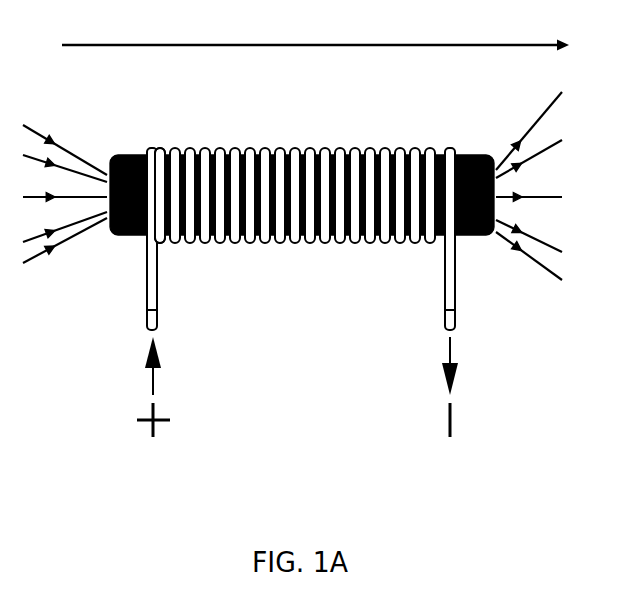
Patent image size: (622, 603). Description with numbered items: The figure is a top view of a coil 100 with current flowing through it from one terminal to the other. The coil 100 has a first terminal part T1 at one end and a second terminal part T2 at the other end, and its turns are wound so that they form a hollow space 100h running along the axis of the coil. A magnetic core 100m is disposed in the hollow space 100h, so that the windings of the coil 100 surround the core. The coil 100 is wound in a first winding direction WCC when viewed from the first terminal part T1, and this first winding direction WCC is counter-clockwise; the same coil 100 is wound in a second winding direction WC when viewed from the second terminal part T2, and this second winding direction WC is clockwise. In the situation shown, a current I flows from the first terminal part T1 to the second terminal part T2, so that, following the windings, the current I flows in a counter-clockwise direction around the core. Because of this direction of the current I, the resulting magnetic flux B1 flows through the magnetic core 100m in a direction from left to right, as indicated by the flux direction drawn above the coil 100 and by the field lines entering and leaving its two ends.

The coil 100 is at (292, 247).
The magnetic core 100m is at (468, 157).
The hollow space 100h is at (196, 147).
The first winding direction WCC is at (157, 147).
The second winding direction WC is at (457, 238).
The first terminal part T1 is at (172, 239).
The second terminal part T2 is at (429, 239).
The magnetic flux B1 is at (315, 29).
The current I is at (436, 341).